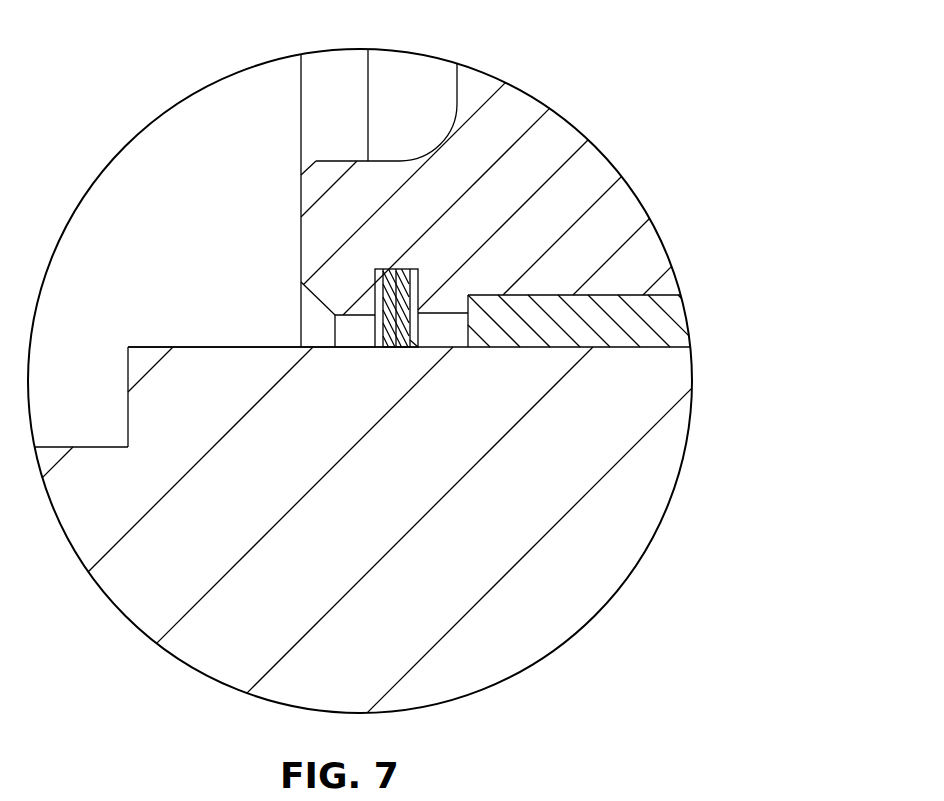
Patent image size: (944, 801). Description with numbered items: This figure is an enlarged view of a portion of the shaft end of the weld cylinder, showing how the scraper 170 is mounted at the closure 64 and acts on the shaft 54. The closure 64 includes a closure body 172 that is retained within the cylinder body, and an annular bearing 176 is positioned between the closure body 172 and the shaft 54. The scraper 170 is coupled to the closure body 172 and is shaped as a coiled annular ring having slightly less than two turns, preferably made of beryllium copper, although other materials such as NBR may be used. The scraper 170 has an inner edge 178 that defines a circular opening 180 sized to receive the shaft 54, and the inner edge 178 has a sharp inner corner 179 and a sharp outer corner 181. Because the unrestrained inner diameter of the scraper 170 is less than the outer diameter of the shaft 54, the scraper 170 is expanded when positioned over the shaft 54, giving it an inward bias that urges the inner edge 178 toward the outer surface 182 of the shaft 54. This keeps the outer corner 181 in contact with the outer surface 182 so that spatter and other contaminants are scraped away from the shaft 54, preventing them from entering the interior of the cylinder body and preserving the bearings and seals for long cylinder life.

The shaft 54 is at (136, 334).
The outer surface of shaft 182 is at (218, 345).
The closure 64 is at (280, 196).
The closure body 172 is at (521, 105).
The scraper 170 is at (429, 263).
The annular bearing 176 is at (638, 288).
The circular opening 180 is at (435, 330).
The outer corner 181 is at (362, 359).
The inner edge 178 is at (397, 348).
The inner corner 179 is at (421, 361).